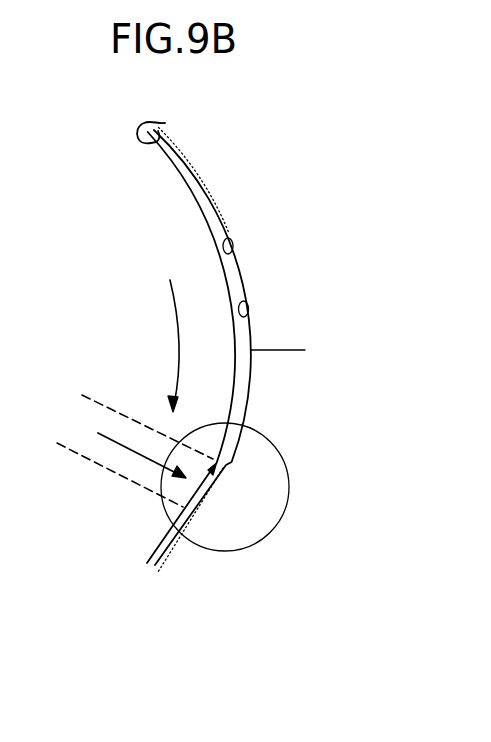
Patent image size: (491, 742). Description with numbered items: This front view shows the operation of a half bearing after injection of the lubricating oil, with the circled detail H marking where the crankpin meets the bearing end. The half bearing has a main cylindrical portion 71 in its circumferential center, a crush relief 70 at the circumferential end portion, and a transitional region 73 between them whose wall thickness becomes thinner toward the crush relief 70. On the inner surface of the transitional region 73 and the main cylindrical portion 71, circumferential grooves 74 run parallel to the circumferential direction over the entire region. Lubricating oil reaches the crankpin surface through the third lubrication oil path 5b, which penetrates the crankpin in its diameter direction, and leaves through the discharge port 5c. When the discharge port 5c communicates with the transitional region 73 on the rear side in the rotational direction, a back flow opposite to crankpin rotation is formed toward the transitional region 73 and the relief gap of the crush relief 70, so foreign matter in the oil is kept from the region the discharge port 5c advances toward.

The crush relief 70 is at (249, 315).
The main cylindrical portion 71 is at (165, 123).
The transitional region 73 is at (234, 254).
The circumferential grooves 74 is at (199, 177).
The third lubrication oil path 5b is at (89, 458).
The discharge port 5c is at (196, 494).
The detail region H is at (282, 455).